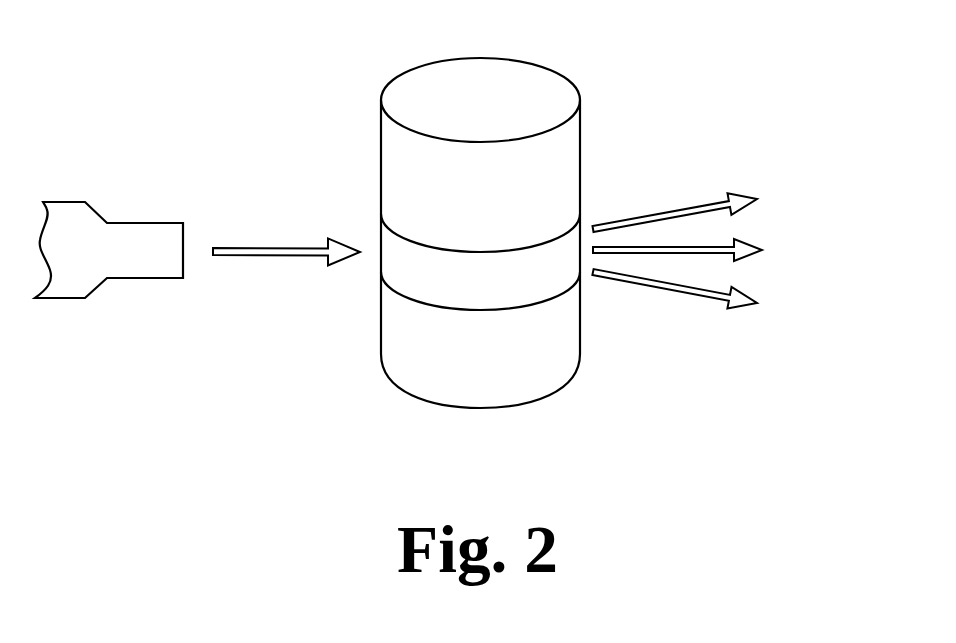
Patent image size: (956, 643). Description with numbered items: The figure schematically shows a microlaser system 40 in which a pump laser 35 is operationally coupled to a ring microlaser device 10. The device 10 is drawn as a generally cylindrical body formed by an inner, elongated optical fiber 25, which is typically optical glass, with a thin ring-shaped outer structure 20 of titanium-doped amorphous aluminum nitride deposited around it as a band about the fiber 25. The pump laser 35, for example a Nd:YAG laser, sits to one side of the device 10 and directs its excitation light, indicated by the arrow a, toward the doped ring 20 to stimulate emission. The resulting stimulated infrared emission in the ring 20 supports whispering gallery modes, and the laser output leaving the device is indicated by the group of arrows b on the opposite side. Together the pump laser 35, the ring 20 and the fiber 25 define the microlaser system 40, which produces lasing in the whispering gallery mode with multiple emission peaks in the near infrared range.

The microlaser 10 is at (610, 86).
The ring-shaped outer structure 20 is at (381, 240).
The inner cylindrical structural portion 25 is at (557, 348).
The pump laser 35 is at (133, 270).
The microlaser system 40 is at (340, 437).
The incident light a is at (262, 254).
The output light b is at (768, 183).